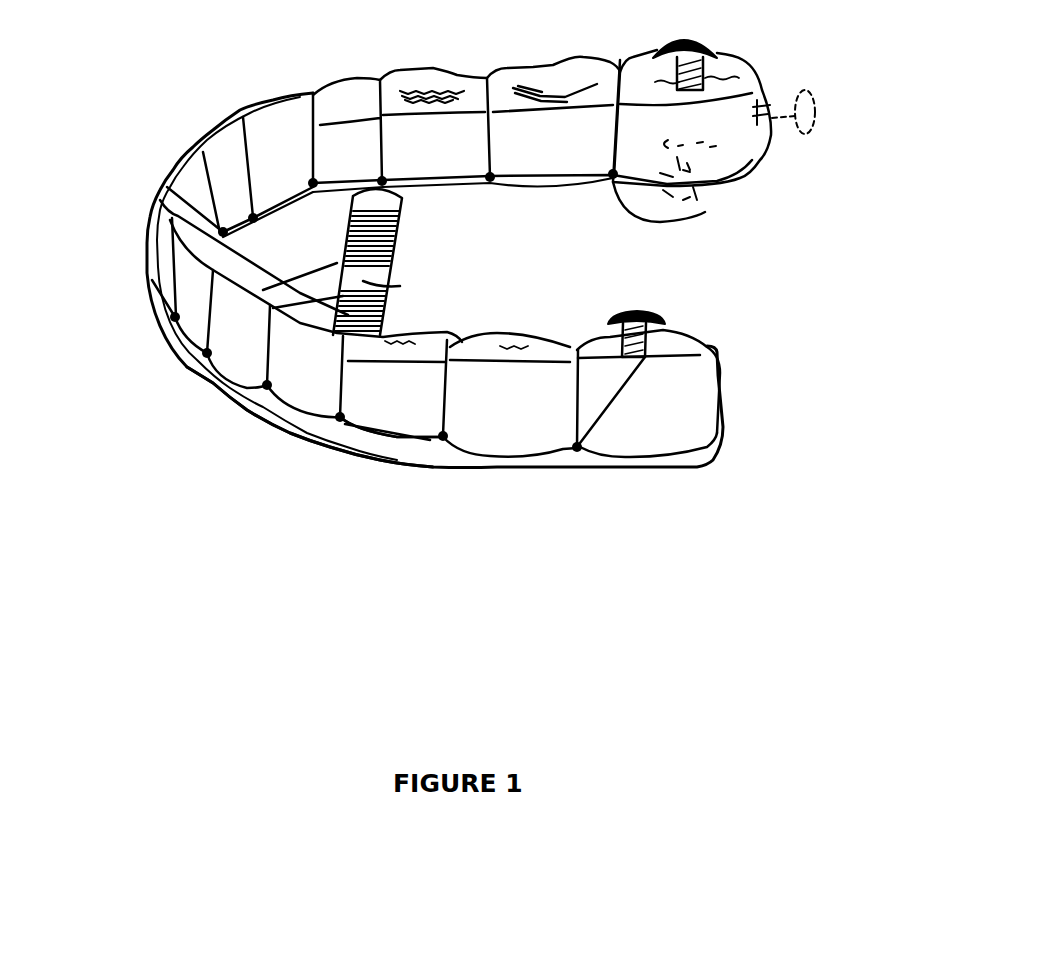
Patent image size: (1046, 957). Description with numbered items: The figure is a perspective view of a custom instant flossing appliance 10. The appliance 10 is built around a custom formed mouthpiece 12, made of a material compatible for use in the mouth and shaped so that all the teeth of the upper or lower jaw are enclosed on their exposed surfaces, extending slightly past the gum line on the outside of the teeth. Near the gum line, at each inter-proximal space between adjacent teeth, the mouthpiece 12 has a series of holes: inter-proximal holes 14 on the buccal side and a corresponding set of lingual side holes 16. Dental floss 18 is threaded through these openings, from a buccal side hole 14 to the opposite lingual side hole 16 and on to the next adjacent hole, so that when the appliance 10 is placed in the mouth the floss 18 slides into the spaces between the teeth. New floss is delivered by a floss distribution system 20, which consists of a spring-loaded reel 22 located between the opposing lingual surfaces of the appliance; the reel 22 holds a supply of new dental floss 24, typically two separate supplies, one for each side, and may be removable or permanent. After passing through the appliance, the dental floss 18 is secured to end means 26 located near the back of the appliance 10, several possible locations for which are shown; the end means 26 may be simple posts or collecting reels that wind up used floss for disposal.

The custom instant flossing appliance 10 is at (170, 126).
The custom formed mouthpiece 12 is at (245, 393).
The inter-proximal holes 14 is at (432, 437).
The lingual side holes 16 is at (705, 212).
The dental floss 18 is at (388, 425).
The floss distribution system 20 is at (404, 307).
The spring-loaded reel 22 is at (413, 284).
The supply of new dental floss 24 is at (410, 232).
The end means 26 is at (666, 318).